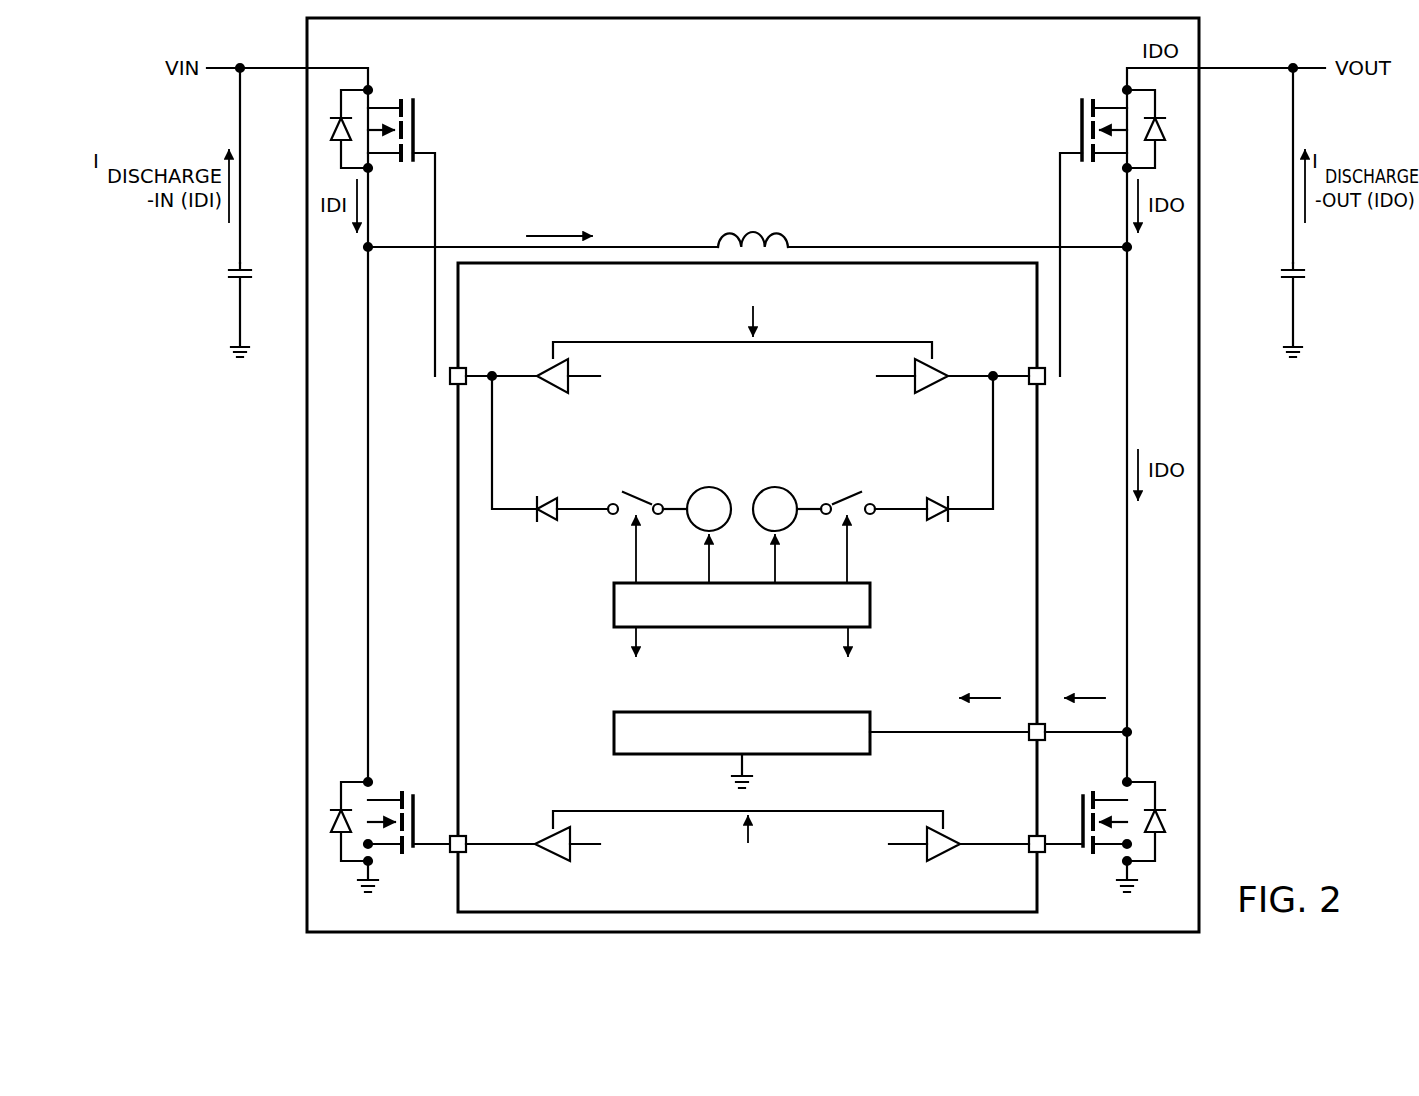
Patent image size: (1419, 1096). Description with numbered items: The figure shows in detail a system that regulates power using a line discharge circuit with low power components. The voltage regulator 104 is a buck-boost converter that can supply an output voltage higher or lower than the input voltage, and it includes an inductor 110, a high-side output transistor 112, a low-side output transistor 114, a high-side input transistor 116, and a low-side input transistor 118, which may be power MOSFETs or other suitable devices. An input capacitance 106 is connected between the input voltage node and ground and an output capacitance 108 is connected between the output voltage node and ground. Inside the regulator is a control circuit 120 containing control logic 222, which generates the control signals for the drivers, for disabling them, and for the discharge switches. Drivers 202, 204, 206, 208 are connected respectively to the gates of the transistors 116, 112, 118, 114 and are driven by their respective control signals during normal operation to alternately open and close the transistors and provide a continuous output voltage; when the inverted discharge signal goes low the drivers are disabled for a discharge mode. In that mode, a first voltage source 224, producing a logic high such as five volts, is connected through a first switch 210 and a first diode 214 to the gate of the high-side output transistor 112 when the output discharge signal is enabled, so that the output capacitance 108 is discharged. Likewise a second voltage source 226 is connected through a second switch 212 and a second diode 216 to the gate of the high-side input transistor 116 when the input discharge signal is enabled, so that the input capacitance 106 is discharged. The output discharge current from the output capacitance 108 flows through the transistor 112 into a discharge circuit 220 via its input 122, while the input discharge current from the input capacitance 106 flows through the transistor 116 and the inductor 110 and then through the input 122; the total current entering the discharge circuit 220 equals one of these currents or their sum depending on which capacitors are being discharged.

The voltage regulator 104 is at (733, 73).
The input capacitance CIN 106 is at (228, 274).
The output capacitance COUT 108 is at (1306, 274).
The inductor 110 is at (743, 228).
The high-side output transistor 112 is at (1077, 118).
The low-side output transistor 114 is at (1072, 807).
The high-side input transistor 116 is at (420, 118).
The low-side input transistor 118 is at (422, 807).
The control circuit 120 is at (494, 310).
The input 122 is at (1029, 738).
The driver 202 is at (549, 390).
The driver 204 is at (938, 384).
The driver 206 is at (549, 855).
The driver 208 is at (950, 852).
The switch S1 210 is at (843, 496).
The switch S2 212 is at (641, 496).
The diode 214 is at (938, 500).
The diode 216 is at (545, 500).
The discharge circuit 220 is at (613, 745).
The control logic 222 is at (613, 605).
The first voltage source 224 is at (793, 529).
The second voltage source 226 is at (691, 529).